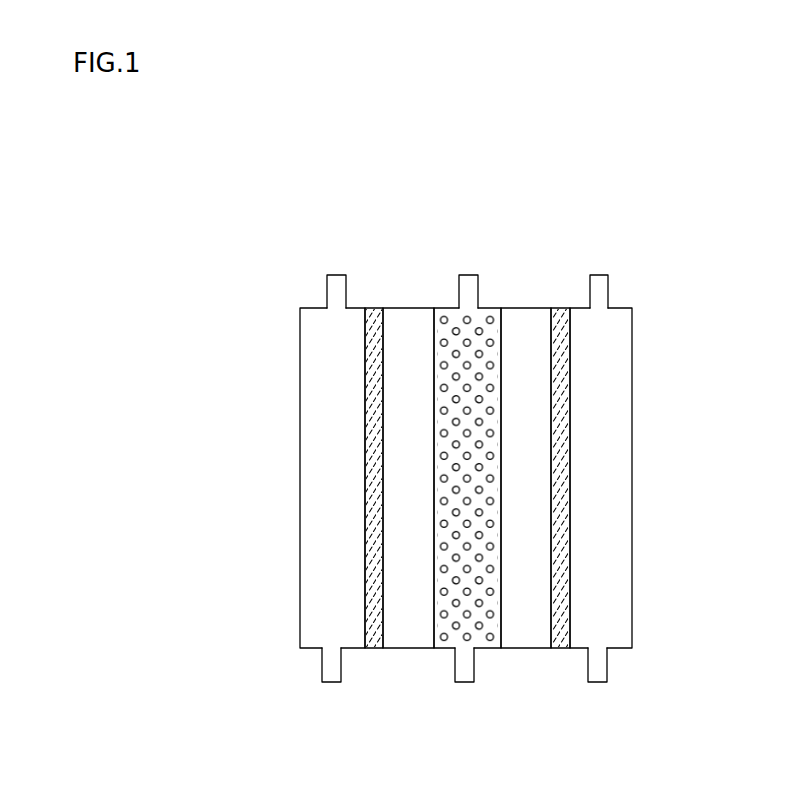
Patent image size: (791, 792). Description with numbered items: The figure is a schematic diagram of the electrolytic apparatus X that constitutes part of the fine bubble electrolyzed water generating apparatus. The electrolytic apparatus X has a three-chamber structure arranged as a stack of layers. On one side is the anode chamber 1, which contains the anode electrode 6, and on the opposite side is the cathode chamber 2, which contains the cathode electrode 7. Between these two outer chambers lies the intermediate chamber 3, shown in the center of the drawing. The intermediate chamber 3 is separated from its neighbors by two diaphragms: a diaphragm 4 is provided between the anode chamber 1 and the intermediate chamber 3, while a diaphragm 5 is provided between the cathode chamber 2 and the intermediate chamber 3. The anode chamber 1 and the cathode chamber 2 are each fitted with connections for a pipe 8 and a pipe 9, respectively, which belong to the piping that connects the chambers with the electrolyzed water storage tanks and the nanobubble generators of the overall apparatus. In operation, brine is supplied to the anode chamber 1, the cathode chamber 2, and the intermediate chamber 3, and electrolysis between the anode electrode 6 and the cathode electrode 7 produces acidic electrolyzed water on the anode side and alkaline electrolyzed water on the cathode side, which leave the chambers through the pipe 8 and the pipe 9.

The electrolytic apparatus X is at (487, 178).
The anode chamber 1 is at (328, 465).
The cathode chamber 2 is at (603, 463).
The intermediate chamber 3 is at (465, 377).
The diaphragm 4 is at (405, 330).
The diaphragm 5 is at (530, 330).
The anode electrode 6 is at (372, 592).
The cathode electrode 7 is at (548, 603).
The pipe 8 is at (337, 287).
The pipe 9 is at (598, 288).